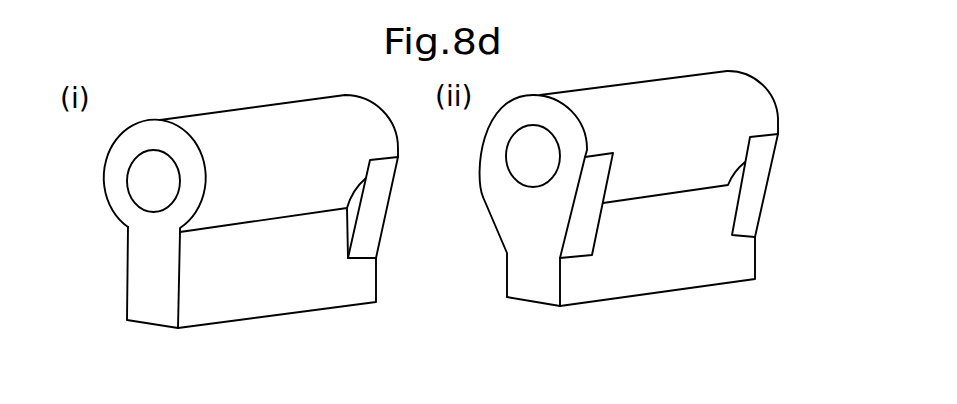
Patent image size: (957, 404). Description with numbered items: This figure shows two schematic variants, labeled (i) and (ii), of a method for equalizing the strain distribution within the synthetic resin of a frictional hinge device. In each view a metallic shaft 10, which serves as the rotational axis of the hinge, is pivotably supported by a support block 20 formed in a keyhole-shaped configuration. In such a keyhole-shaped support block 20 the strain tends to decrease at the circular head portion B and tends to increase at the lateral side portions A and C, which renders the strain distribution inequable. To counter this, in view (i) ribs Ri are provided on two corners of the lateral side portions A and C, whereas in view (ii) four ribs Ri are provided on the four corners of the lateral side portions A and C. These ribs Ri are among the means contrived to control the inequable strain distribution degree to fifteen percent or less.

The metallic shaft 10 is at (321, 211).
The support block 20 is at (485, 189).
The lateral side portion A is at (324, 262).
The circular head portion B is at (469, 104).
The lateral side portion C is at (466, 245).
The rib Ri is at (375, 222).